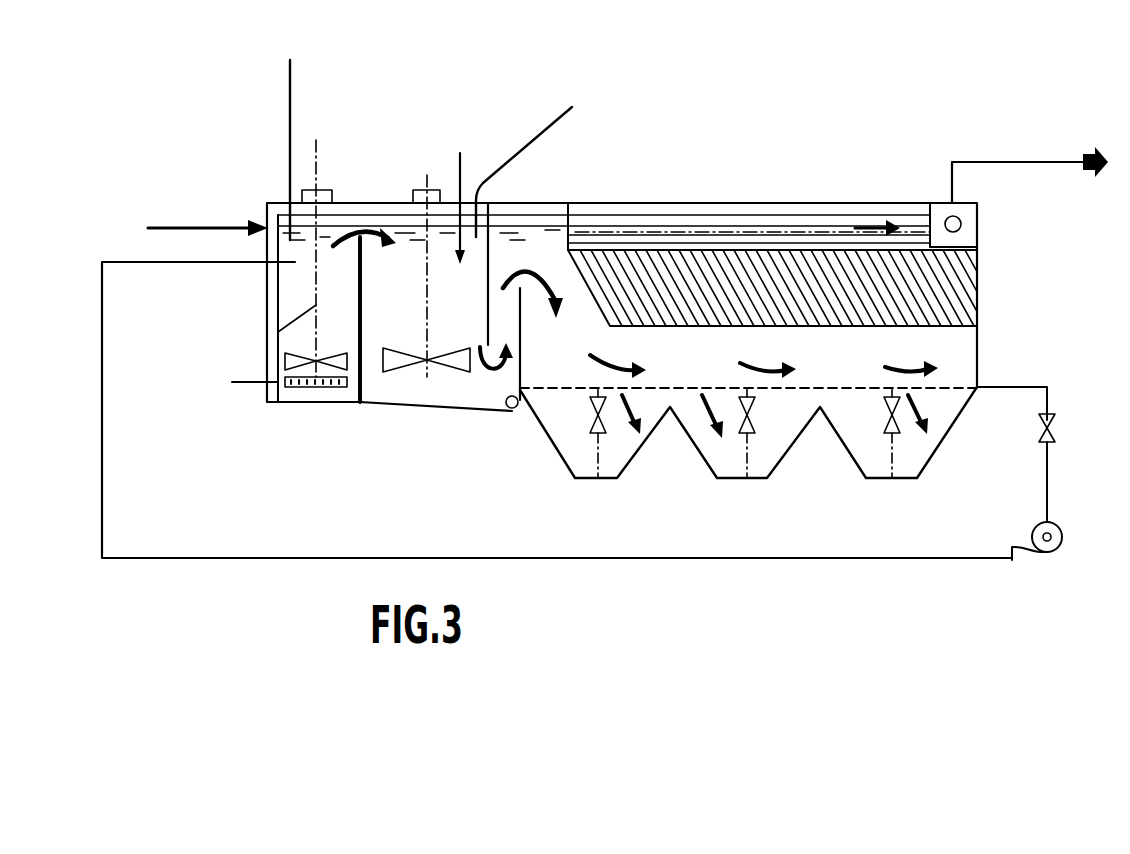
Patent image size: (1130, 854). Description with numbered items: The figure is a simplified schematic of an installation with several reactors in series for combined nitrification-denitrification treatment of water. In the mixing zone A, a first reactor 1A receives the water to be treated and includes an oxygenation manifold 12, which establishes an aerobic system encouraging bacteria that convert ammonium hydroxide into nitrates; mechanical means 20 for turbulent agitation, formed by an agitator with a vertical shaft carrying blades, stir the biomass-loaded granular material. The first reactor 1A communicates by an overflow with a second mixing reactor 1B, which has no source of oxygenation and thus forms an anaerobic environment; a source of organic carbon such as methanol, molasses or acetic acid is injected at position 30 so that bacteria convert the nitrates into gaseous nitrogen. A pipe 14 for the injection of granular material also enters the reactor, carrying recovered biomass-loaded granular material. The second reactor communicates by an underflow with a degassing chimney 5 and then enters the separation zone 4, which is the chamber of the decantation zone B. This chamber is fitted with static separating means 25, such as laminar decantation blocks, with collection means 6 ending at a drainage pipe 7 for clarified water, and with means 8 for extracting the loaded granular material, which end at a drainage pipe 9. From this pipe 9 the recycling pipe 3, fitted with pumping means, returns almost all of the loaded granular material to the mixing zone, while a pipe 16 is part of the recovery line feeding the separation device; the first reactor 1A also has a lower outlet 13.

The pipe for the injection of granular material 14 is at (291, 110).
The organic carbon injection position 30 is at (540, 134).
The second mixing reactor 1B is at (461, 193).
The degassing chimney 5 is at (504, 243).
The collection means 6 is at (757, 223).
The drainage pipe for clarified water 7 is at (1024, 162).
The separating means 25 is at (927, 283).
The separation zone 4 is at (992, 333).
The drainage pipe for loaded granular material 9 is at (980, 387).
The pipe 16 is at (1080, 412).
The means for the extraction of the granular material 8 is at (872, 403).
The decantation zone B is at (708, 487).
The recycling pipe 3 is at (888, 560).
The mixing zone A is at (303, 428).
The drain outlet 13 is at (245, 383).
The oxygenation manifold 12 is at (325, 388).
The mechanical means for turbulent agitation 20 is at (392, 358).
The first reactor 1A is at (268, 307).